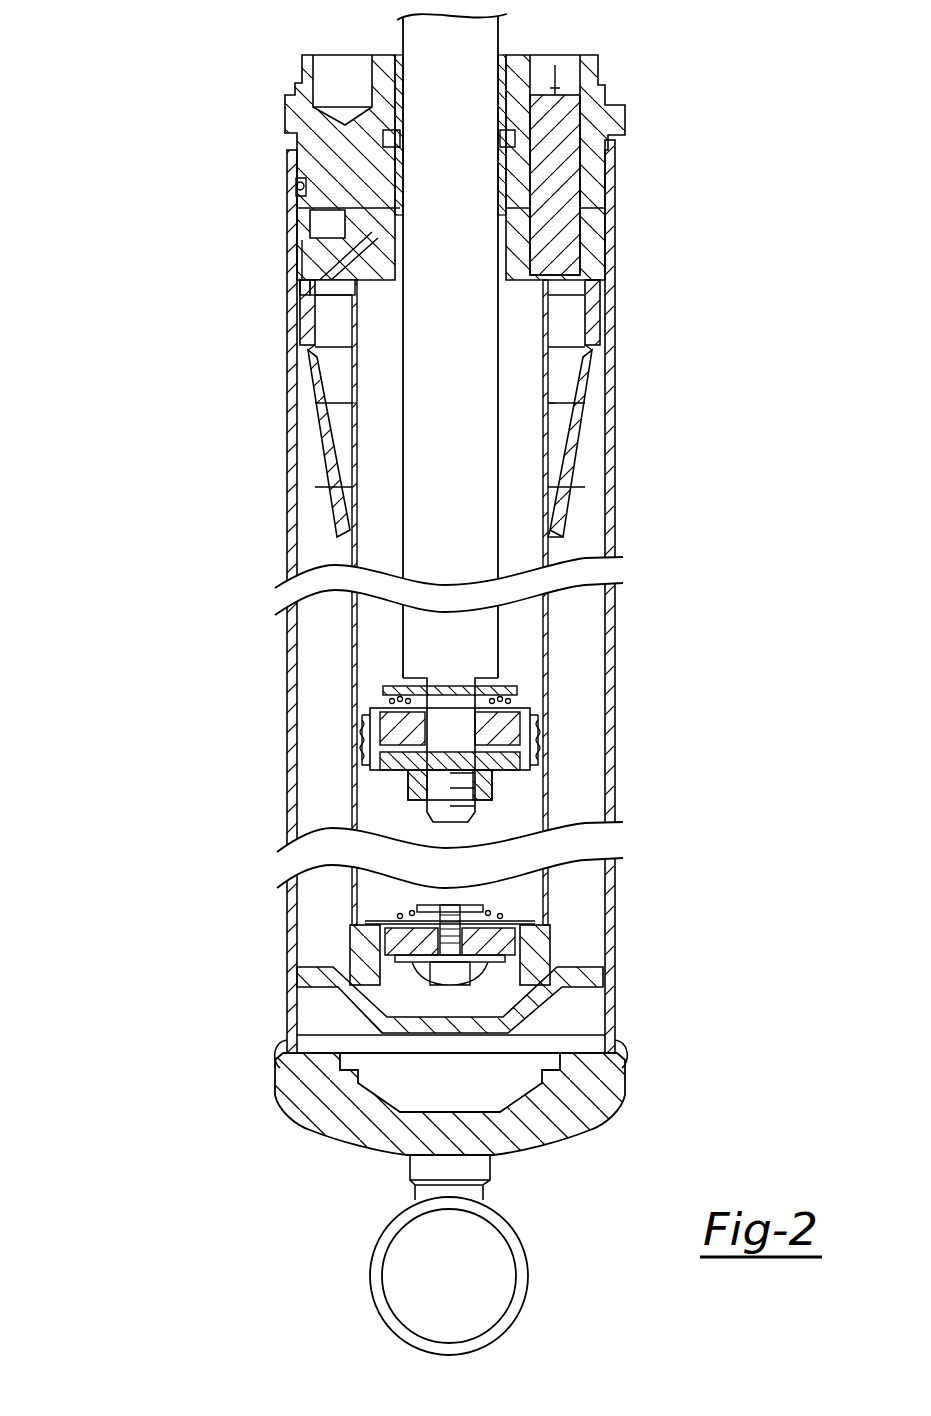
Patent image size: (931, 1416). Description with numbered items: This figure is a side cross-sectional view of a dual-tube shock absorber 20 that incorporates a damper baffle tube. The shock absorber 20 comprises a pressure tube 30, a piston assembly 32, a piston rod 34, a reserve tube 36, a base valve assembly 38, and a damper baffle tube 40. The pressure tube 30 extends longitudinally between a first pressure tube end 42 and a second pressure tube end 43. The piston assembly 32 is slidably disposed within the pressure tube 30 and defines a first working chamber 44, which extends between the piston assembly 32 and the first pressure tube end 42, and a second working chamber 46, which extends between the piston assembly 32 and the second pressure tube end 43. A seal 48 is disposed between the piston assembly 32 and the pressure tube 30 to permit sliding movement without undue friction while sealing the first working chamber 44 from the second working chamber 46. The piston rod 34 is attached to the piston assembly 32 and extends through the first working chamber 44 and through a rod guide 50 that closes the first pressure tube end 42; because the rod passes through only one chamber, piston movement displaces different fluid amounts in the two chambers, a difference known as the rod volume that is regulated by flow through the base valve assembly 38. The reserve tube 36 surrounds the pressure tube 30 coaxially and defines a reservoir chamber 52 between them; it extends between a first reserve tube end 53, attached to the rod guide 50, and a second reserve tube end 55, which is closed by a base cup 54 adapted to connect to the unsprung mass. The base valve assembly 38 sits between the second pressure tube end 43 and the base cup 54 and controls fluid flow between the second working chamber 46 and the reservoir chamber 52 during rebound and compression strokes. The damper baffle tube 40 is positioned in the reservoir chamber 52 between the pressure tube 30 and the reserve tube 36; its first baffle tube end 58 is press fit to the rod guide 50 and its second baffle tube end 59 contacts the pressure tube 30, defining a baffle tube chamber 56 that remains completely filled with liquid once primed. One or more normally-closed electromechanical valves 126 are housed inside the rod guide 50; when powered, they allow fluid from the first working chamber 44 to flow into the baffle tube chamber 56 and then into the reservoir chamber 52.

The shock absorber 20 is at (140, 198).
The pressure tube 30 is at (553, 690).
The piston assembly 32 is at (378, 782).
The piston rod 34 is at (418, 65).
The reserve tube 36 is at (290, 690).
The base valve assembly 38 is at (513, 914).
The damper baffle tube 40 is at (578, 445).
The first pressure tube end 42 is at (363, 318).
The second pressure tube end 43 is at (345, 925).
The first working chamber 44 is at (393, 633).
The second working chamber 46 is at (505, 830).
The seal 48 is at (365, 752).
The rod guide 50 is at (286, 117).
The reservoir chamber 52 is at (562, 640).
The first reserve tube end 53 is at (283, 184).
The base cup 54 is at (308, 1098).
The second reserve tube end 55 is at (287, 1020).
The baffle tube chamber 56 is at (556, 333).
The first baffle tube end 58 is at (300, 285).
The second baffle tube end 59 is at (555, 527).
The electromechanical valve 126 is at (560, 183).